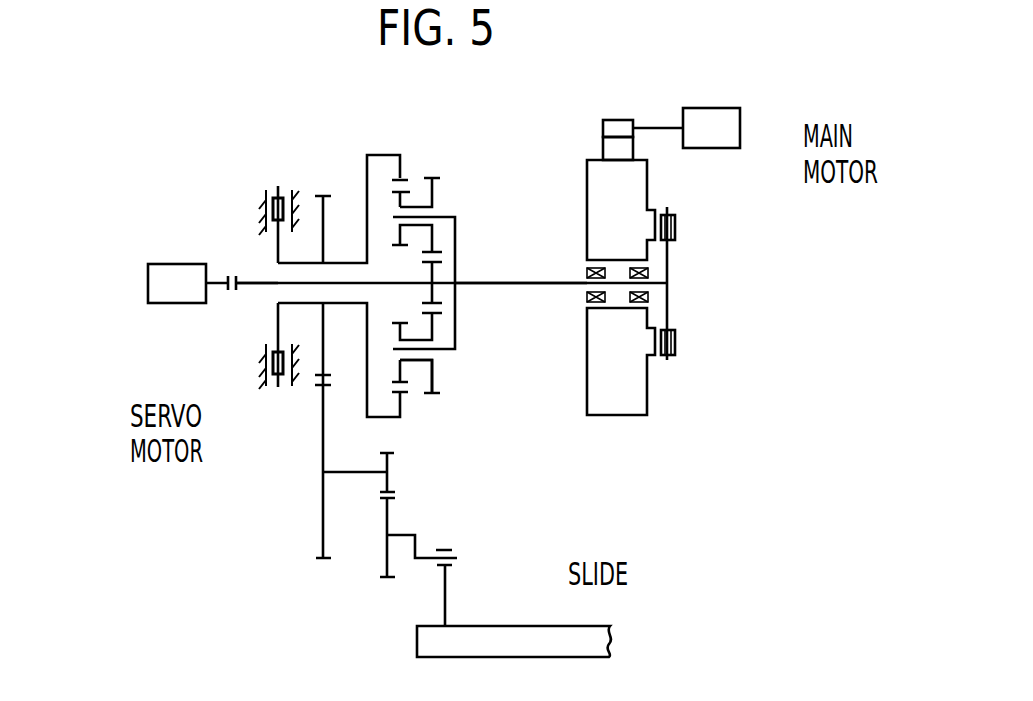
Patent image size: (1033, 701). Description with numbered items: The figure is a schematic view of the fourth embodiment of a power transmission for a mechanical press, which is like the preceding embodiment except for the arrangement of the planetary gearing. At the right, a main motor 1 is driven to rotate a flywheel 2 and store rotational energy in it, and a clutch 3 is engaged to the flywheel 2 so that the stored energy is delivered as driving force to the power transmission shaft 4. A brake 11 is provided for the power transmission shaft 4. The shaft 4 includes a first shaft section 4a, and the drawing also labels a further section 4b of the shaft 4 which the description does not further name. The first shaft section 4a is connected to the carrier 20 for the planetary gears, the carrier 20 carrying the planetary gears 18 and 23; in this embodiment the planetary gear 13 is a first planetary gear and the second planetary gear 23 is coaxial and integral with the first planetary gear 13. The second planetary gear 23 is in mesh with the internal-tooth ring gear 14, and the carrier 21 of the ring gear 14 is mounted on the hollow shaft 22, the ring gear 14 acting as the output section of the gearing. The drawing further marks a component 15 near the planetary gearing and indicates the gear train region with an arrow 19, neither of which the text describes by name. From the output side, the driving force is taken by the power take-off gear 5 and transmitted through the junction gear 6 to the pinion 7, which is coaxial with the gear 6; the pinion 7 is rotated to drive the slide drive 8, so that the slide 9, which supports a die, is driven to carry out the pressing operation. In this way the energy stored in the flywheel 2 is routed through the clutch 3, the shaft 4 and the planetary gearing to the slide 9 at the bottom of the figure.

The main motor 1 is at (740, 128).
The flywheel 2 is at (630, 415).
The clutch 3 is at (675, 340).
The power transmission shaft 4 is at (552, 298).
The first shaft section 4a is at (540, 283).
The main shaft portion 4b is at (258, 283).
The power take-off gear 5 is at (317, 203).
The junction gear 6 is at (324, 515).
The pinion 7 is at (387, 465).
The slide drive 8 is at (443, 531).
The slide 9 is at (545, 626).
The brake 11 is at (272, 188).
The first planetary gear 13 is at (436, 192).
The internal-tooth ring gear 14 is at (405, 403).
The hub 15 is at (433, 292).
The planetary gear 18 is at (178, 303).
The gear train 19 is at (452, 374).
The carrier 20 is at (456, 232).
The carrier 21 is at (365, 162).
The hollow shaft 22 is at (297, 292).
The second planetary gear 23 is at (405, 198).